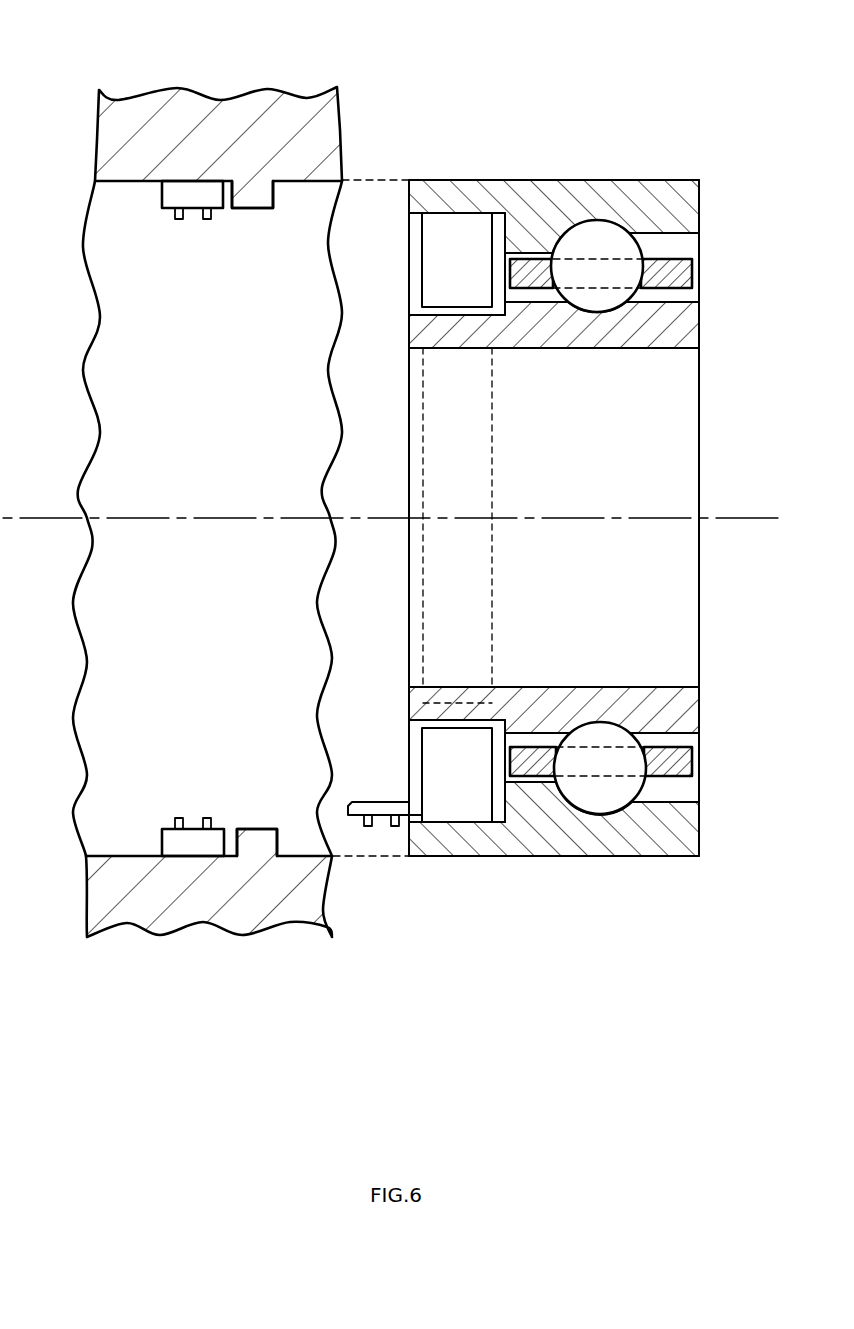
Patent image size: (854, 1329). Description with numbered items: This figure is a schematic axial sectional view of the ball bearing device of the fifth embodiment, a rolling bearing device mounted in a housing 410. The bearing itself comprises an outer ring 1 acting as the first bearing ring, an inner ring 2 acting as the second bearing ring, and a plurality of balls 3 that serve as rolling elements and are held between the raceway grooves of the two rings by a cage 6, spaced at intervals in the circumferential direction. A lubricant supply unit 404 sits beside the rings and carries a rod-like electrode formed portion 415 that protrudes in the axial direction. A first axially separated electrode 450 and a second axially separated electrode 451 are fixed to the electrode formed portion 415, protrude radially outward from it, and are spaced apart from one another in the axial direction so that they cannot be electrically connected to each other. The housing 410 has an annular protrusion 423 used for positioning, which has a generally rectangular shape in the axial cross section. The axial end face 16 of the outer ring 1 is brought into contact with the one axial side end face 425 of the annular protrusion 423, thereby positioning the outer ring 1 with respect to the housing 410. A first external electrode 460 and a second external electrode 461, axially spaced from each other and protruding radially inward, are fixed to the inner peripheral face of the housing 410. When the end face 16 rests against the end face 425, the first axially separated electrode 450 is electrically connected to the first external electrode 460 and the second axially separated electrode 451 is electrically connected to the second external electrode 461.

The outer ring 1 is at (610, 200).
The inner ring 2 is at (687, 327).
The balls 3 is at (627, 247).
The cage 6 is at (690, 273).
The axial end face 16 is at (404, 200).
The lubricant supply unit 404 is at (455, 235).
The housing 410 is at (168, 917).
The electrode formed portion 415 is at (347, 816).
The annular protrusion 423 is at (257, 829).
The one axial side end face 425 is at (276, 190).
The first axially separated electrode 450 is at (395, 826).
The second axially separated electrode 451 is at (367, 826).
The first external electrode 460 is at (203, 819).
The second external electrode 461 is at (178, 819).